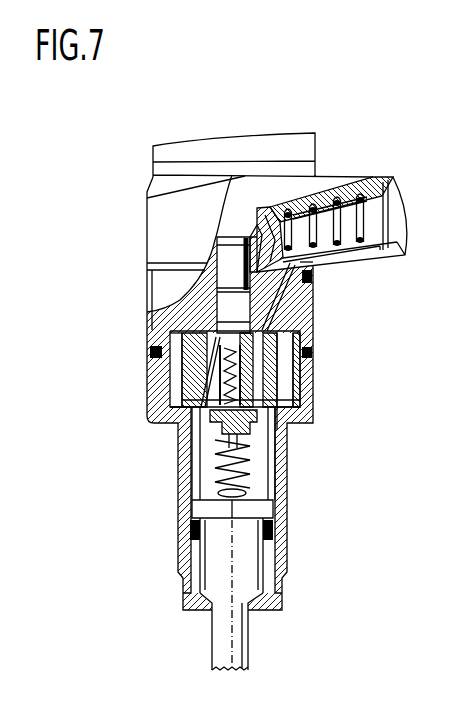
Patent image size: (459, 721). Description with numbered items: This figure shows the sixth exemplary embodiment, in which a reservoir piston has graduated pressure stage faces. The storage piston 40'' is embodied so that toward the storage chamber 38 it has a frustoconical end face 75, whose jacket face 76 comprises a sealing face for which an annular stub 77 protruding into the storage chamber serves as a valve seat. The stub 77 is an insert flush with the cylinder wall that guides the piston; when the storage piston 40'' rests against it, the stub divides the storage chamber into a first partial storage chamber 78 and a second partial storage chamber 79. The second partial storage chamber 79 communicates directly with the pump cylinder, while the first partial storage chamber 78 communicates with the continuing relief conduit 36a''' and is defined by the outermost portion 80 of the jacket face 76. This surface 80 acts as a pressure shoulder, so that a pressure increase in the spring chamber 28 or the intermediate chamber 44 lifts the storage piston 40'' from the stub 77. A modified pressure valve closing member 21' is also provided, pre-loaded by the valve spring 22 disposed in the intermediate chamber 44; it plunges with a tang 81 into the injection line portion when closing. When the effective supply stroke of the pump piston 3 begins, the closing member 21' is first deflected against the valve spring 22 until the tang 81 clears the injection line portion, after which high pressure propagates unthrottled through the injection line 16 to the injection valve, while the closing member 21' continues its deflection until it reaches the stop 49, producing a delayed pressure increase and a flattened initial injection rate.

The pump piston 3 is at (205, 256).
The injection line 16 is at (200, 478).
The pressure valve closing member 21' is at (177, 369).
The valve spring 22 is at (195, 390).
The spring chamber 28 is at (255, 470).
The continuing relief conduit 36a''' is at (306, 384).
The storage chamber 38 is at (195, 226).
The storage piston 40'' is at (332, 186).
The intermediate chamber 44 is at (178, 422).
The stop 49 is at (292, 427).
The frustoconical end face 75 is at (250, 237).
The jacket face 76 is at (262, 235).
The annular stub 77 is at (302, 312).
The first partial storage chamber 78 is at (269, 218).
The second partial storage chamber 79 is at (218, 237).
The outermost portion of the conical jacket face 80 is at (310, 262).
The tang 81 is at (170, 338).